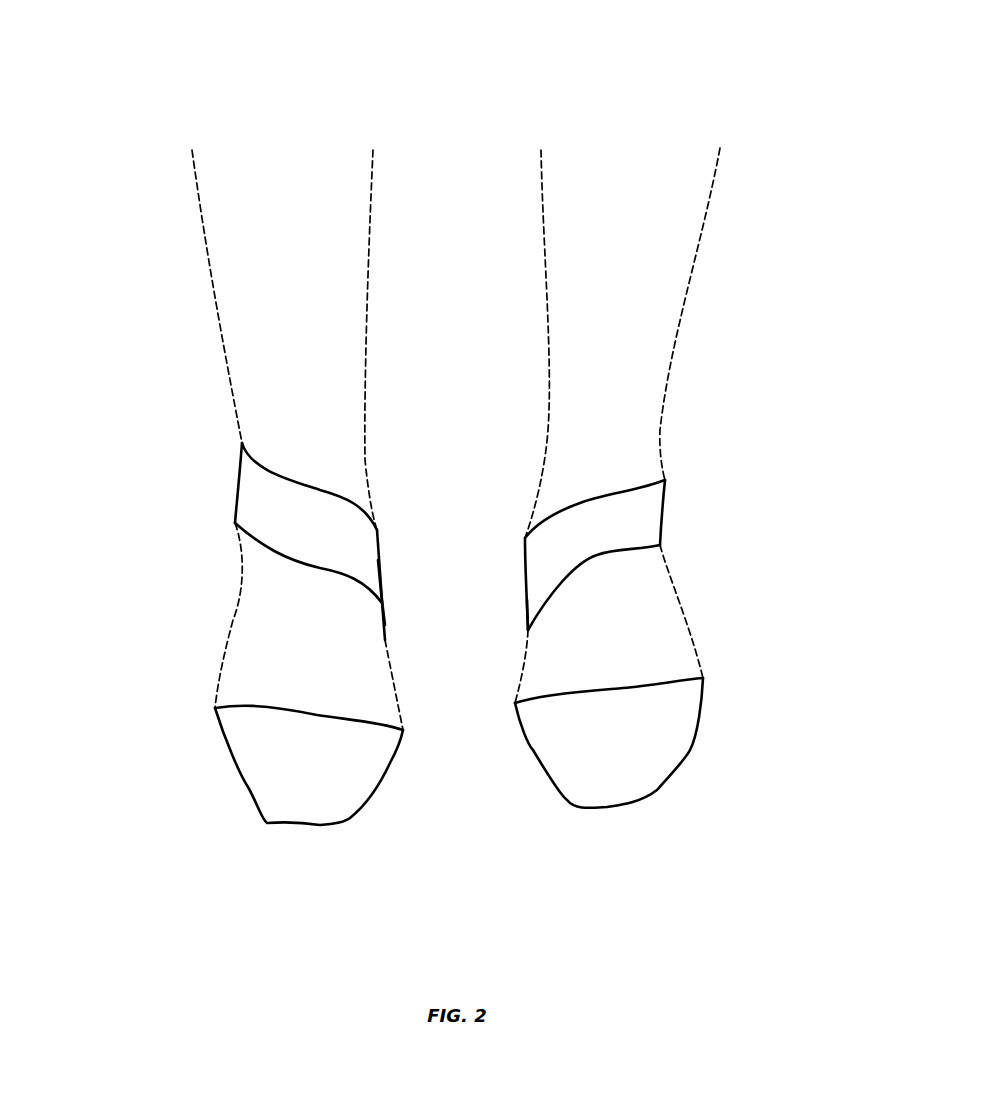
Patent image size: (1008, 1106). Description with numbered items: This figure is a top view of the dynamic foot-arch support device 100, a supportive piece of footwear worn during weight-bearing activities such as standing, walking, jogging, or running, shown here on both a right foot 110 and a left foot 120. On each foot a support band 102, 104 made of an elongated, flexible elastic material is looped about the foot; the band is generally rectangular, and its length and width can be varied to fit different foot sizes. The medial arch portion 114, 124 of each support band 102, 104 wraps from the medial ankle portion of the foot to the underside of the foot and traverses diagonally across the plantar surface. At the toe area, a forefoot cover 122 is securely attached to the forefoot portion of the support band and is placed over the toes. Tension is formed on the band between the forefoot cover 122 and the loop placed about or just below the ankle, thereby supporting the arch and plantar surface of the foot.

The dynamic foot-arch support device 100 is at (461, 76).
The right foot 110 is at (120, 586).
The left foot 120 is at (794, 586).
The support band 102 is at (259, 521).
The support band 104 is at (645, 518).
The medial arch portion 114 is at (383, 602).
The medial arch portion 124 is at (528, 617).
The forefoot cover 122 is at (653, 777).